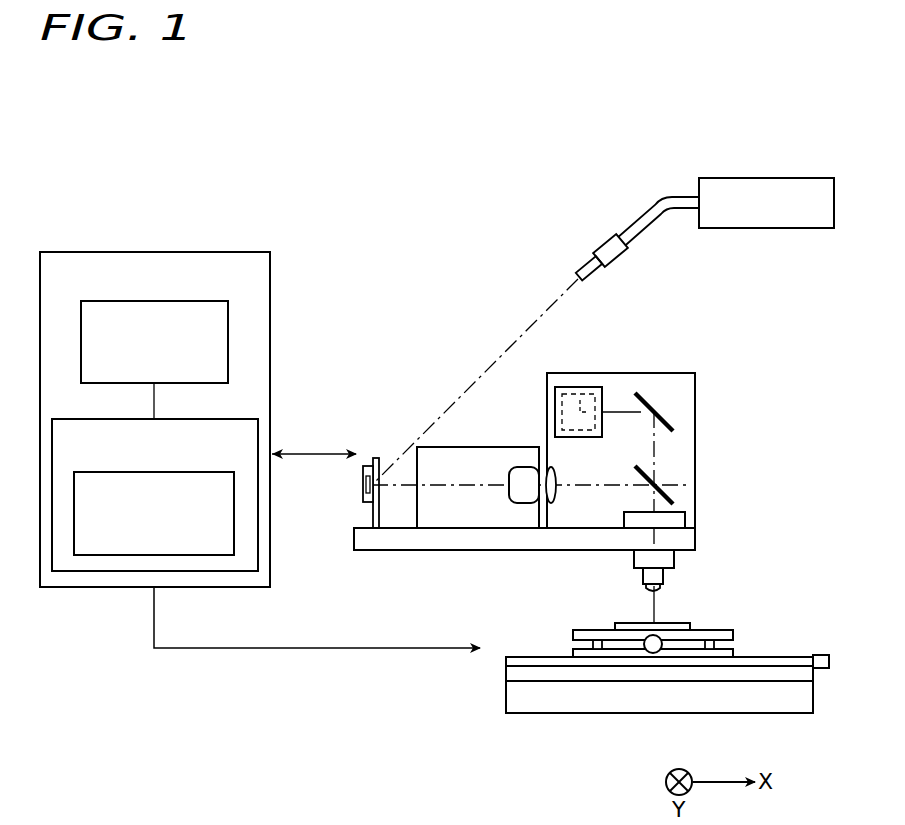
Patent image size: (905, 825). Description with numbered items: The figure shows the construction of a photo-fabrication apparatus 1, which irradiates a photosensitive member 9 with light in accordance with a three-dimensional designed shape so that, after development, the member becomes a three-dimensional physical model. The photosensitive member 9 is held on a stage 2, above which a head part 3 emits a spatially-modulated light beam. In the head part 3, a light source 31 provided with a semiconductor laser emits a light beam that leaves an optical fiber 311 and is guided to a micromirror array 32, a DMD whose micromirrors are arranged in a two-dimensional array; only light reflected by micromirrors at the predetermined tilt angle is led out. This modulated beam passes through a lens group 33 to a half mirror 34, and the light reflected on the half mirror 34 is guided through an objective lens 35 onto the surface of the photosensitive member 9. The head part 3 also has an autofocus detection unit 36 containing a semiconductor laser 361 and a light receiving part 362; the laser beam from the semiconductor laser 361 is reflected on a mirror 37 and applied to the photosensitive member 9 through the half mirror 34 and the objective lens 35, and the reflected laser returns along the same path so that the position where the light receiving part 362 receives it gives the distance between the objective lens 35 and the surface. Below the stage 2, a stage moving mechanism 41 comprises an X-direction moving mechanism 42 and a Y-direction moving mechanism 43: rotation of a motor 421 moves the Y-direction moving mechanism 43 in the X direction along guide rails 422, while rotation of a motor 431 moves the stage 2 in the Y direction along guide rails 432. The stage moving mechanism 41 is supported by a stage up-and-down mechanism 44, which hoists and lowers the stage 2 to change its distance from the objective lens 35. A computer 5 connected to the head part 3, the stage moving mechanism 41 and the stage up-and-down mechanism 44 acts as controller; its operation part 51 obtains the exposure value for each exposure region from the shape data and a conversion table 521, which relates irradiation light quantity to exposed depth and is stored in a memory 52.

The photo-fabrication apparatus 1 is at (182, 137).
The stage 2 is at (700, 631).
The head part 3 is at (669, 316).
The light source 31 is at (769, 178).
The optical fiber 311 is at (648, 213).
The micromirror array (DMD) 32 is at (371, 466).
The lens group 33 is at (524, 466).
The half mirror 34 is at (657, 487).
The objective lens 35 is at (665, 560).
The autofocus detection unit 36 is at (572, 387).
The semiconductor laser 361 is at (589, 389).
The light receiving part 362 is at (580, 388).
The mirror 37 is at (658, 413).
The stage moving mechanism 41 is at (758, 613).
The X-direction moving mechanism 42 is at (758, 644).
The motor 421 is at (822, 669).
The guide rails 422 is at (769, 663).
The Y-direction moving mechanism 43 is at (564, 644).
The motor 431 is at (653, 653).
The guide rails 432 is at (597, 649).
The stage up-and-down mechanism 44 is at (524, 700).
The computer 5 is at (120, 252).
The operation part 51 is at (228, 334).
The memory 52 is at (182, 571).
The conversion table 521 is at (234, 523).
The photosensitive member 9 is at (665, 624).